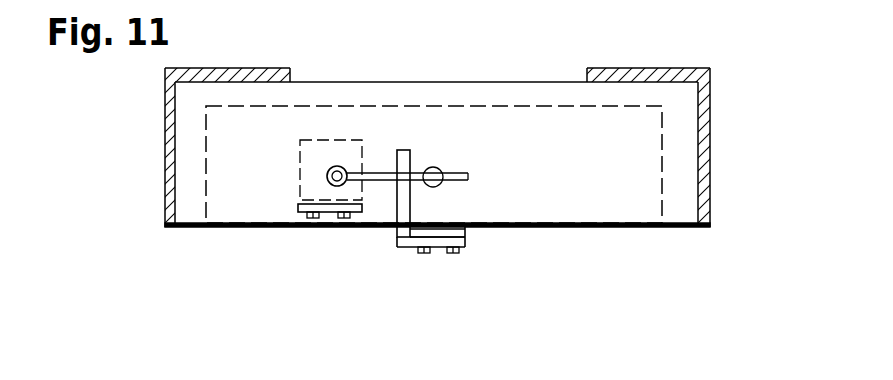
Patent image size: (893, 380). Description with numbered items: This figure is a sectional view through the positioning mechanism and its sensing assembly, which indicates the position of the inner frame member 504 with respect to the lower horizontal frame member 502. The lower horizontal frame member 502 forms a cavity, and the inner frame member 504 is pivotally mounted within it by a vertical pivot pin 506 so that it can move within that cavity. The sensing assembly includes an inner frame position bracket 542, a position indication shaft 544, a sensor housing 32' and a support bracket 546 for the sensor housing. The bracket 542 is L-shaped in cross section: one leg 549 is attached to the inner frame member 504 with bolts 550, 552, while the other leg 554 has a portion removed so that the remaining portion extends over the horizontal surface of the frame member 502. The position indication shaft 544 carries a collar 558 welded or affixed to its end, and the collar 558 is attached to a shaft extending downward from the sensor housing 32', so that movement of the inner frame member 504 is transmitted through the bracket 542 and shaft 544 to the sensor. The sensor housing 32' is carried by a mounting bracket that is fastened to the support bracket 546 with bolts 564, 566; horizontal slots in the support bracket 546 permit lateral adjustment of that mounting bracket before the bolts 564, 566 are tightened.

The lower horizontal frame member 502 is at (703, 130).
The inner frame member 504 is at (663, 178).
The sensor housing 32' is at (331, 106).
The collar 558 is at (327, 176).
The position indication shaft 544 is at (463, 172).
The vertical pivot pin 506 is at (440, 167).
The other leg of the bracket 554 is at (413, 157).
The inner frame position bracket 542 is at (402, 247).
The leg of the bracket 549 is at (448, 242).
The bolt 550 is at (425, 253).
The bolt 552 is at (455, 253).
The support bracket 546 is at (300, 207).
The bolt 564 is at (312, 218).
The bolt 566 is at (342, 218).